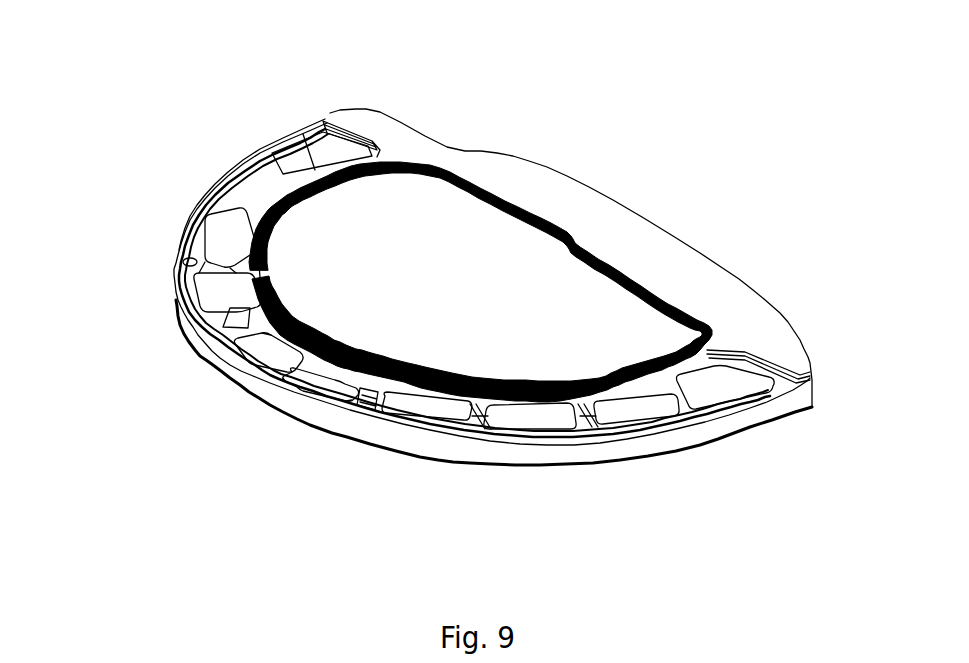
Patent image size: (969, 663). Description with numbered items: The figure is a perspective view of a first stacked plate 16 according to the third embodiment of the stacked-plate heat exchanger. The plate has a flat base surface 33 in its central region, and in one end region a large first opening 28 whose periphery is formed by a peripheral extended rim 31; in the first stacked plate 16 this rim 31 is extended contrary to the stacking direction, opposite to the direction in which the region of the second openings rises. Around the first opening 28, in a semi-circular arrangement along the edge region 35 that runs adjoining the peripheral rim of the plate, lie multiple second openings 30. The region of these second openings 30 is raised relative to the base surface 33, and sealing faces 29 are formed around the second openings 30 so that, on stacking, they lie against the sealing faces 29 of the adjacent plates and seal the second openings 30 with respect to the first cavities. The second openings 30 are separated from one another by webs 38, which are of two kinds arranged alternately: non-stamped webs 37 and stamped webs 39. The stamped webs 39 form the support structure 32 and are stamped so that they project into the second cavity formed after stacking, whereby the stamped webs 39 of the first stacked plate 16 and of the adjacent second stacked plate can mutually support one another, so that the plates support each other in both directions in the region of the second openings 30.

The first stacked plate 16 is at (750, 143).
The first opening 28 is at (478, 250).
The sealing face 29 is at (337, 343).
The second opening 30 is at (263, 193).
The peripheral extended rim 31 is at (398, 366).
The support structure 32 is at (215, 198).
The base surface 33 is at (628, 231).
The edge region 35 is at (583, 497).
The non-stamped web 37 is at (310, 180).
The web 38 is at (486, 348).
The stamped web 39 is at (446, 348).